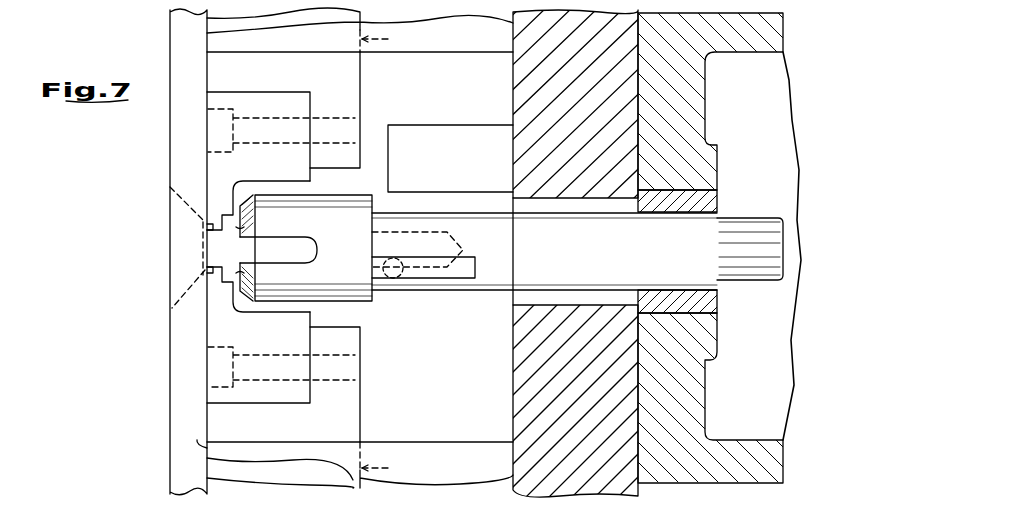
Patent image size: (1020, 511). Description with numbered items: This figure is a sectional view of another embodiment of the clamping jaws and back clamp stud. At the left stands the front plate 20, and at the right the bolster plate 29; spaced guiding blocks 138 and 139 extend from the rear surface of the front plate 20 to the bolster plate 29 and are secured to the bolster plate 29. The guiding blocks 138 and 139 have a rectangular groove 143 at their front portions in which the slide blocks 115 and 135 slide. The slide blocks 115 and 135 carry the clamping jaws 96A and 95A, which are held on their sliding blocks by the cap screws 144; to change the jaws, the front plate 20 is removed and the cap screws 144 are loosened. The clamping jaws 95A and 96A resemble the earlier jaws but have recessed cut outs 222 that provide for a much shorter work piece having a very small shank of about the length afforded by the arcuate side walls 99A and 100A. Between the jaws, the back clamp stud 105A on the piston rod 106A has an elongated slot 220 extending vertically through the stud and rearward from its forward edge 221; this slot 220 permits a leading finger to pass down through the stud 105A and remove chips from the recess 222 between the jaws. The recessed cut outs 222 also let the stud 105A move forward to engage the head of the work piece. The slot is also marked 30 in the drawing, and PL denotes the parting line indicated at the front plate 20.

The front plate 20 is at (168, 334).
The bolster plate 29 is at (530, 405).
The slot 30 is at (226, 282).
The clamping jaw 95A is at (263, 392).
The clamping jaw 96A is at (257, 100).
The arcuate side wall 99A is at (205, 269).
The arcuate side wall 100A is at (207, 227).
The back clamp stud 105A is at (350, 215).
The piston rod 106A is at (515, 262).
The slide block 115 is at (343, 90).
The slide block 135 is at (340, 407).
The guiding block 138 is at (463, 43).
The guiding block 139 is at (373, 452).
The rectangular groove 143 is at (397, 256).
The cap screws 144 is at (220, 110).
The elongated slot 220 is at (277, 258).
The forward edge 221 is at (244, 227).
The recessed cut out 222 is at (298, 184).
The parting line PL is at (207, 448).